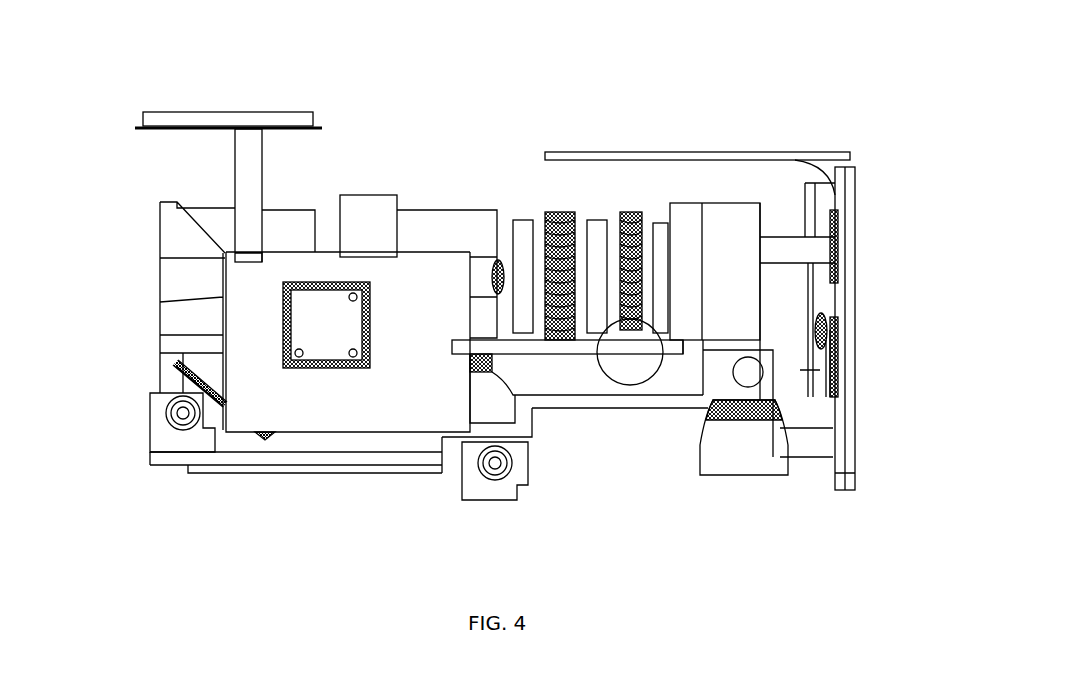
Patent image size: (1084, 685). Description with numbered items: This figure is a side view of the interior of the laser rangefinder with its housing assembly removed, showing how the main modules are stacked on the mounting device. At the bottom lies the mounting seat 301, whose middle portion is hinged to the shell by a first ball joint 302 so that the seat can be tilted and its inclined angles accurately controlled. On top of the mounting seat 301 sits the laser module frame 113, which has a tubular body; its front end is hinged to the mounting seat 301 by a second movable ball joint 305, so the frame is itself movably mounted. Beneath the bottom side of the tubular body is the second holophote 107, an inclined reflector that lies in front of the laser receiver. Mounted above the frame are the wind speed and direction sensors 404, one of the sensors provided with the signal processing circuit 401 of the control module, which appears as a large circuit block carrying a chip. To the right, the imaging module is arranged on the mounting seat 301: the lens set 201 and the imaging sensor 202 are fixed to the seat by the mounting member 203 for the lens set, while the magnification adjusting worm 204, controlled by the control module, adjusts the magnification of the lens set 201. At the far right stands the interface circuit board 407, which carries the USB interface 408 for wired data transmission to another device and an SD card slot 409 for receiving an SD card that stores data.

The wind speed and direction sensors 404 is at (203, 108).
The laser module frame 113 is at (178, 232).
The second holophote 107 is at (205, 395).
The second movable ball joint 305 is at (158, 432).
The mounting seat 301 is at (253, 462).
The signal processing circuit 401 is at (338, 408).
The first ball joint 302 is at (482, 483).
The lens set 201 is at (543, 212).
The magnification adjusting worm 204 is at (630, 373).
The mounting member for the lens set 203 is at (730, 242).
The imaging sensor 202 is at (762, 222).
The SD card slot 409 is at (803, 375).
The interface circuit board 407 is at (813, 287).
The USB interface 408 is at (820, 357).